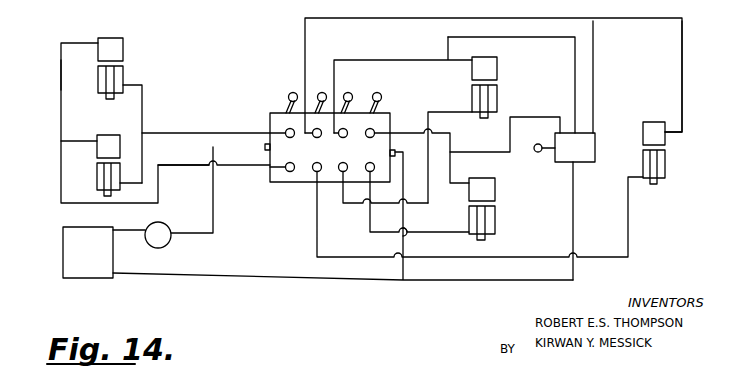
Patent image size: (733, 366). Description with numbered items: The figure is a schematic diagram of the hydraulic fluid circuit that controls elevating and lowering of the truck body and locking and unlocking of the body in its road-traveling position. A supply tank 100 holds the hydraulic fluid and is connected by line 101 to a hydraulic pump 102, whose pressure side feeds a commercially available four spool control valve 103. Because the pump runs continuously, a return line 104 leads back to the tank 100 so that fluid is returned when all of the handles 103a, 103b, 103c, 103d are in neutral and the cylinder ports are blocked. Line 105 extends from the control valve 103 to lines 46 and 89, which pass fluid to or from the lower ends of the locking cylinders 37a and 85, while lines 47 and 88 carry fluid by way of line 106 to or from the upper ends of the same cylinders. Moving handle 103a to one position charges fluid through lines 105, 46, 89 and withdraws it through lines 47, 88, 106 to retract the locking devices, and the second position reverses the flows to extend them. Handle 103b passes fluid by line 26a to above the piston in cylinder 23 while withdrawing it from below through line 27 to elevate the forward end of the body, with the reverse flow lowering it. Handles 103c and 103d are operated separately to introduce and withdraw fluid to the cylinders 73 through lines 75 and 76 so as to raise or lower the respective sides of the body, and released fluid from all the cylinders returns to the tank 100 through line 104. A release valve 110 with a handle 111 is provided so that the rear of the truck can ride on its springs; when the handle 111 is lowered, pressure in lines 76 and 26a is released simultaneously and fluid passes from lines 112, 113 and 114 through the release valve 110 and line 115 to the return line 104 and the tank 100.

The line 47 is at (61, 72).
The locking cylinder 37a is at (123, 46).
The line 46 is at (142, 103).
The line 88 is at (89, 141).
The locking cylinder 85 is at (97, 157).
The line 89 is at (132, 183).
The line 106 is at (58, 178).
The line 105 is at (213, 133).
The supply tank 100 is at (88, 252).
The line 101 is at (128, 230).
The hydraulic pump 102 is at (168, 226).
The four spool control valve 103 is at (330, 147).
The valve handle 103a is at (286, 108).
The valve handle 103b is at (314, 108).
The valve handle 103c is at (352, 108).
The valve handle 103d is at (381, 108).
The line 76 is at (400, 60).
The line 75 is at (435, 112).
The cylinder 73 is at (497, 75).
The line 113 is at (575, 70).
The line 114 is at (593, 70).
The line 26a is at (682, 75).
The line 112 is at (540, 117).
The release valve 110 is at (575, 147).
The handle 111 is at (543, 155).
The line 115 is at (573, 222).
The return line 104 is at (405, 218).
The line 27 is at (628, 224).
The cylinder 23 is at (665, 143).